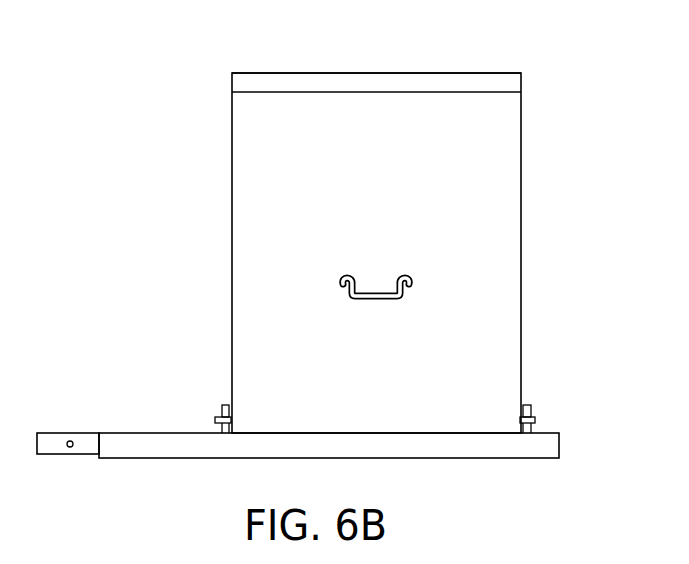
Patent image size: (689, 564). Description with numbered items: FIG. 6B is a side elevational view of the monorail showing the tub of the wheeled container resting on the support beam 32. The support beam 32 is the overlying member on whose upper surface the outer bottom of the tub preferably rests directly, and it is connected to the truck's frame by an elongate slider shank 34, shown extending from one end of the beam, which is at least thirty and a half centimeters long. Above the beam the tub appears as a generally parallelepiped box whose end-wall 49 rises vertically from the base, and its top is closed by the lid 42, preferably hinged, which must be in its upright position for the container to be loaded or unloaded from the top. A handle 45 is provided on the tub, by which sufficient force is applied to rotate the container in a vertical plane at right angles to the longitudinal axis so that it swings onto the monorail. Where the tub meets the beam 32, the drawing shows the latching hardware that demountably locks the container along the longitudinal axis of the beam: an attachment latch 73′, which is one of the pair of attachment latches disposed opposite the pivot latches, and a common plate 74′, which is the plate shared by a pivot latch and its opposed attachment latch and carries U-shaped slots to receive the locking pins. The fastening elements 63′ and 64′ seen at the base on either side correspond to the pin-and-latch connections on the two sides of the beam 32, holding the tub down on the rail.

The lid 42 is at (438, 73).
The handle 45 is at (400, 277).
The end-wall 49 is at (388, 373).
The support beam 32 is at (522, 460).
The slider shank 34 is at (63, 432).
The attachment latch 73′ is at (223, 405).
The left nut 63′ is at (215, 420).
The common plate 74′ is at (578, 343).
The right nut 64′ is at (634, 397).